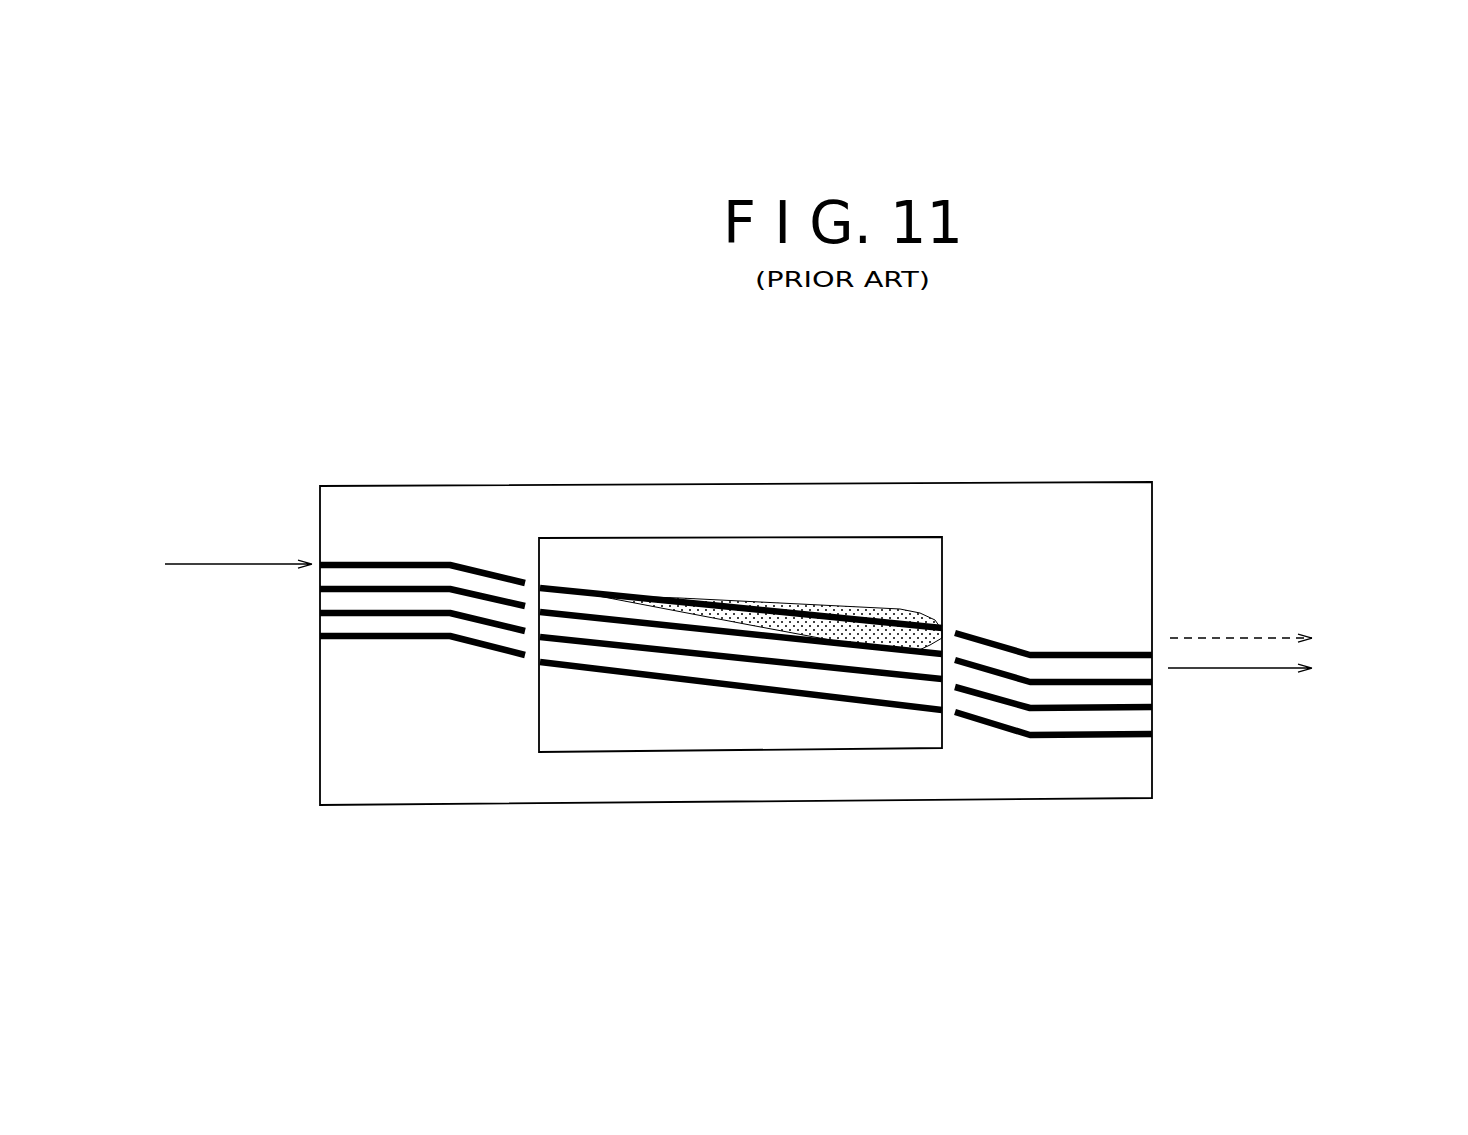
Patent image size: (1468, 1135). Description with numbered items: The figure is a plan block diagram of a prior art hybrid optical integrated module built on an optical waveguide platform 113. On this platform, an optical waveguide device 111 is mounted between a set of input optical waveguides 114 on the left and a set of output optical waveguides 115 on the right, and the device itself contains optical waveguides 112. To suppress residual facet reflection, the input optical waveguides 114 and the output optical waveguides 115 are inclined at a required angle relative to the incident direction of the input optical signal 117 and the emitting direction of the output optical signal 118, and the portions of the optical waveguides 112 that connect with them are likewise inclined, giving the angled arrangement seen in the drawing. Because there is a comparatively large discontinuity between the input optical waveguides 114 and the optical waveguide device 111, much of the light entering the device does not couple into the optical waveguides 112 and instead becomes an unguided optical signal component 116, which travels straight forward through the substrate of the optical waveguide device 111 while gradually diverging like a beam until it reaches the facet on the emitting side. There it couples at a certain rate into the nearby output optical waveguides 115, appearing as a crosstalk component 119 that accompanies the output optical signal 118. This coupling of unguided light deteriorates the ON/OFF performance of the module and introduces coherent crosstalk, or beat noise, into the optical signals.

The optical waveguide device 111 is at (624, 529).
The optical waveguides 112 is at (788, 565).
The optical waveguide platform 113 is at (345, 474).
The input optical waveguides 114 is at (442, 535).
The output optical waveguides 115 is at (1100, 535).
The unguided optical signal component 116 is at (882, 645).
The input optical signal 117 is at (213, 602).
The output optical signal 118 is at (1237, 670).
The crosstalk component 119 is at (1248, 610).